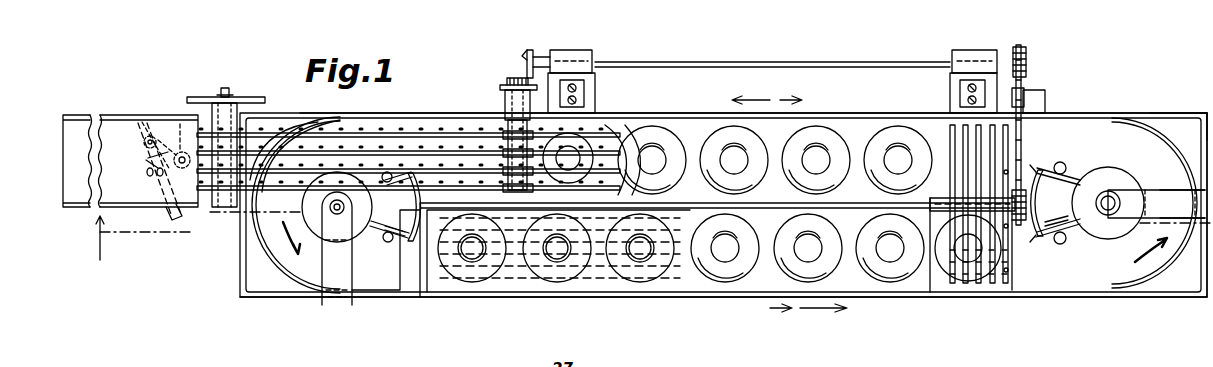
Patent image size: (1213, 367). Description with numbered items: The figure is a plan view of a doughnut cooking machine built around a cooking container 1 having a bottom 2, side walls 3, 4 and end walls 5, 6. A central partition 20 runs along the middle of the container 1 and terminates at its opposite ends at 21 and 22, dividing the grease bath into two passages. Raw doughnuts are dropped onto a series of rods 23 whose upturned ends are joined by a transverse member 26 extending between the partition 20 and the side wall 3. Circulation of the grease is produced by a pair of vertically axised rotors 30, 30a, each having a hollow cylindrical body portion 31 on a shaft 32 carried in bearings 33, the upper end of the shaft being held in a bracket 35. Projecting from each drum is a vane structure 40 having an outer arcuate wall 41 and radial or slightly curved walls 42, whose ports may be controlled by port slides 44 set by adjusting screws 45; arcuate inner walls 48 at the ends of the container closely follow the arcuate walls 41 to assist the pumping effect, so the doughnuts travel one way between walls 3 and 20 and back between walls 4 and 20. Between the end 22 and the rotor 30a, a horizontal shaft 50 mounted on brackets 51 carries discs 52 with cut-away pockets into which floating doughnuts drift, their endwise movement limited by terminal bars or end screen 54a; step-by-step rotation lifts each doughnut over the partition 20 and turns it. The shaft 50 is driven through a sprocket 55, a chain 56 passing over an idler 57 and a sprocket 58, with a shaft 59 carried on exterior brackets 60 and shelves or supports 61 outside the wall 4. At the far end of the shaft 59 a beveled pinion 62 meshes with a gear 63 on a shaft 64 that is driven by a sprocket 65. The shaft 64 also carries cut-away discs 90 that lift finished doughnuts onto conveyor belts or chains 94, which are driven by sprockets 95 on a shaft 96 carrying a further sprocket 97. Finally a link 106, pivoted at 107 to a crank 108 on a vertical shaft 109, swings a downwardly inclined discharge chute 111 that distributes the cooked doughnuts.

The cooking container 1 is at (1183, 310).
The bottom 2 is at (141, 248).
The side wall 3 is at (910, 298).
The side wall 4 is at (1108, 113).
The end wall 5 is at (1206, 112).
The end wall 6 is at (243, 270).
The central partition 20 is at (773, 208).
The partition end 21 is at (412, 296).
The partition end 22 is at (932, 292).
The rods 23 is at (528, 300).
The transverse member 26 is at (430, 292).
The rotor 30 is at (305, 207).
The rotor 30a is at (1140, 168).
The hollow cylindrical body portion 31 is at (312, 236).
The shaft 32 is at (1145, 186).
The bearings 33 is at (1166, 196).
The bracket 35 is at (340, 305).
The vane structure 40 is at (1033, 172).
The outer arcuate wall 41 is at (409, 199).
The radial walls 42 is at (406, 222).
The port slides 44 is at (380, 239).
The adjusting screws 45 is at (387, 172).
The arcuate inner walls 48 is at (290, 285).
The horizontal shaft 50 is at (938, 198).
The brackets 51 is at (912, 172).
The discs 52 is at (992, 284).
The terminal bars or end screen 54a is at (1008, 272).
The sprocket 55 is at (1032, 260).
The chain 56 is at (1022, 138).
The idler 57 is at (1024, 94).
The sprocket 58 is at (1027, 53).
The shaft 59 is at (706, 70).
The exterior brackets 60 is at (592, 58).
The shelf or support 61 is at (595, 90).
The beveled gear or pinion 62 is at (527, 68).
The gear 63 is at (510, 77).
The shaft 64 is at (503, 108).
The sprocket 65 is at (490, 84).
The discs 90 is at (626, 125).
The conveyor belts or chains 94 is at (283, 160).
The sprockets 95 is at (194, 215).
The shaft 96 is at (226, 88).
The sprocket 97 is at (213, 97).
The link 106 is at (172, 220).
The pivot 107 is at (148, 136).
The crank 108 is at (142, 160).
The shaft 109 is at (178, 123).
The discharge chute 111 is at (80, 116).